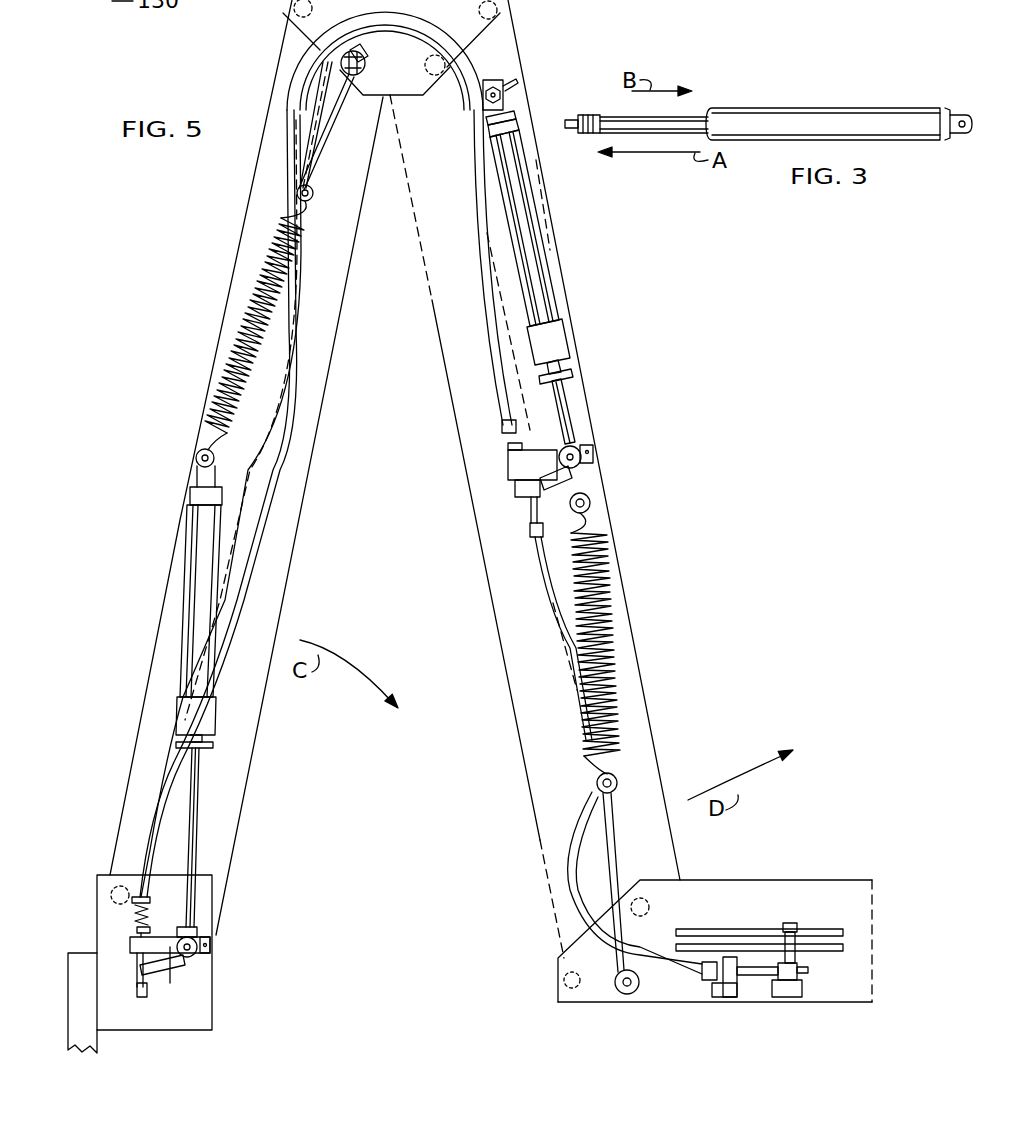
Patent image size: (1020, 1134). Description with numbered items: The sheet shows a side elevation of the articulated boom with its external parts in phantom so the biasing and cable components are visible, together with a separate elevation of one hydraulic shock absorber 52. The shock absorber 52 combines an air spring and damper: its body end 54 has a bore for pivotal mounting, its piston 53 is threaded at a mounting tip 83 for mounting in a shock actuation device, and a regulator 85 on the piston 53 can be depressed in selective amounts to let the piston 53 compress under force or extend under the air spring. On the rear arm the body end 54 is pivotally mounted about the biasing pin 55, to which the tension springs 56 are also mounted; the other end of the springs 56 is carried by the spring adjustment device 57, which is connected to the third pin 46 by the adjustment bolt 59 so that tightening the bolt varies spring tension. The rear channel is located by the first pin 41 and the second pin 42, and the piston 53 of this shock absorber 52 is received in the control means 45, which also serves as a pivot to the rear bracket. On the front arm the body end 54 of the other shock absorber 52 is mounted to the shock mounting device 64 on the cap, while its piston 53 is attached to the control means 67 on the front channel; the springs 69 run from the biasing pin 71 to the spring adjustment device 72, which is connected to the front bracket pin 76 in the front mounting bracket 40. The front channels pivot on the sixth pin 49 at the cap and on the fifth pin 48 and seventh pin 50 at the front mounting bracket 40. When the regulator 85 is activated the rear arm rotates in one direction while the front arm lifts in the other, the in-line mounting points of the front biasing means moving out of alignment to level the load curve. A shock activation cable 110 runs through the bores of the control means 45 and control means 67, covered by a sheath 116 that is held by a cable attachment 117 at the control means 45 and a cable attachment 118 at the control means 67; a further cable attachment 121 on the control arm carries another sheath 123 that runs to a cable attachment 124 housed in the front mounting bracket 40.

In FIG. 5, the front mounting bracket 40 is at (847, 880).
In FIG. 5, the first pin 41 is at (128, 880).
In FIG. 5, the second pin 42 is at (292, 15).
In FIG. 5, the control means 45 is at (208, 938).
In FIG. 5, the third pin 46 is at (305, 48).
In FIG. 5, the fifth pin 48 is at (648, 900).
In FIG. 5, the sixth pin 49 is at (443, 67).
In FIG. 5, the seventh pin 50 is at (562, 980).
In FIG. 3, the shock absorber 52 is at (754, 80).
In FIG. 5, the piston 53 is at (212, 835).
In FIG. 3, the piston 53 is at (628, 133).
In FIG. 5, the body end 54 is at (190, 572).
In FIG. 3, the body end 54 is at (838, 108).
In FIG. 5, the biasing pin 55 is at (198, 460).
In FIG. 5, the springs 56 is at (278, 240).
In FIG. 5, the spring adjustment device 57 is at (298, 192).
In FIG. 5, the adjustment bolt 59 is at (325, 80).
In FIG. 5, the shock mounting device 64 is at (522, 87).
In FIG. 5, the control means 67 is at (590, 441).
In FIG. 5, the springs 69 is at (610, 556).
In FIG. 5, the biasing pin 71 is at (588, 500).
In FIG. 5, the spring adjustment device 72 is at (617, 782).
In FIG. 5, the front bracket pin 76 is at (622, 990).
In FIG. 3, the mounting tip 83 is at (572, 122).
In FIG. 5, the regulator 85 is at (198, 960).
In FIG. 3, the regulator 85 is at (585, 134).
In FIG. 5, the shock activation cable 110 is at (125, 965).
In FIG. 5, the sheath 116 is at (267, 508).
In FIG. 5, the cable attachment 117 is at (152, 917).
In FIG. 5, the cable attachment 118 is at (505, 440).
In FIG. 5, the cable attachment 121 is at (530, 520).
In FIG. 5, the sheath 123 is at (548, 568).
In FIG. 5, the cable attachment 124 is at (712, 980).